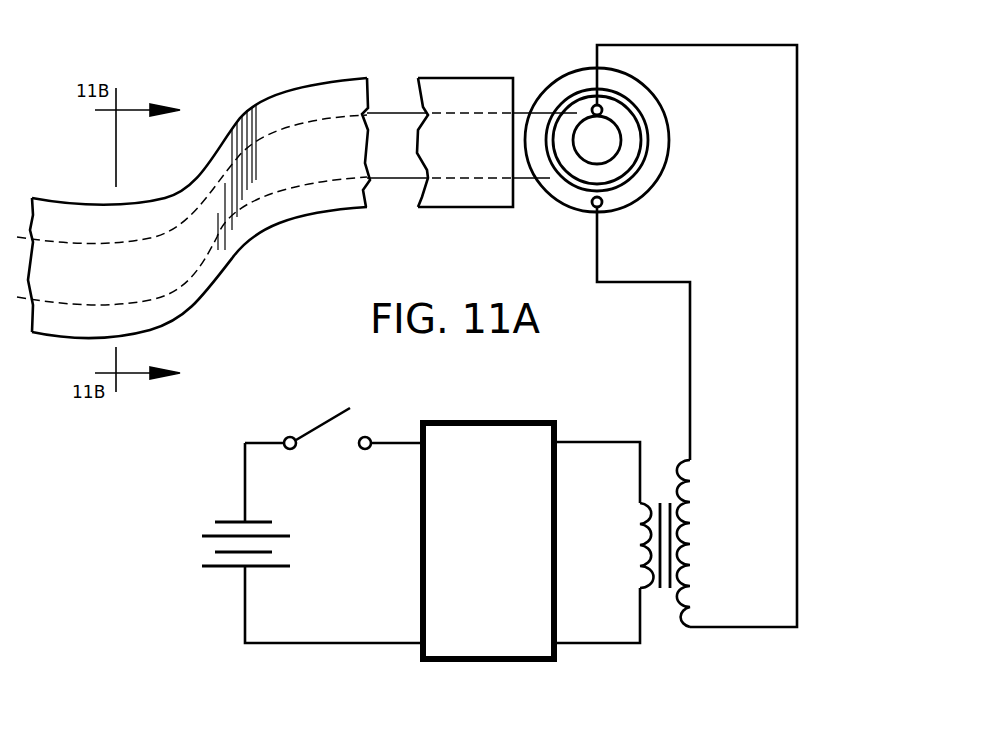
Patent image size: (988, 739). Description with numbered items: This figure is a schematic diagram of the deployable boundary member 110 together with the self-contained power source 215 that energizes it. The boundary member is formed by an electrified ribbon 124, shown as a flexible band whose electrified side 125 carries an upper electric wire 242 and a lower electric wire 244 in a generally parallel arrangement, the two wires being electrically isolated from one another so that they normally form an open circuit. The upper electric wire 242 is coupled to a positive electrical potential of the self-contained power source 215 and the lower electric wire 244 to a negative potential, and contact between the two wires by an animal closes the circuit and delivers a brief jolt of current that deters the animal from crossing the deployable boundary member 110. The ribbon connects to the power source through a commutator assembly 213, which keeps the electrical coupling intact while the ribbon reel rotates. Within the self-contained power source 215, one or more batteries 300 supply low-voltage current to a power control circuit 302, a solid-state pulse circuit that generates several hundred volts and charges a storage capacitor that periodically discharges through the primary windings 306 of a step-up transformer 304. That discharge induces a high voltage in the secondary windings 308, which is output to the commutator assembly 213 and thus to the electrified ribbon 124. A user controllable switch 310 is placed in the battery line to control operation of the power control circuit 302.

The deployable boundary member 110 is at (214, 98).
The electrified ribbon 124 is at (175, 310).
The electrified side 125 is at (328, 166).
The upper electric wire 242 is at (323, 113).
The lower electric wire 244 is at (280, 190).
The commutator assembly 213 is at (643, 93).
The self-contained power source 215 is at (205, 612).
The batteries 300 is at (262, 520).
The power control circuit 302 is at (508, 554).
The step-up transformer 304 is at (658, 430).
The primary windings 306 is at (642, 523).
The secondary windings 308 is at (688, 584).
The user controllable switch 310 is at (287, 438).